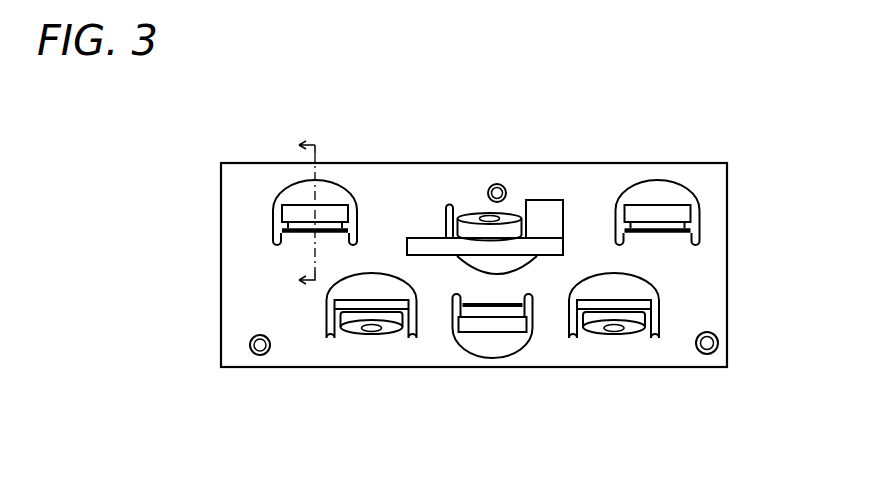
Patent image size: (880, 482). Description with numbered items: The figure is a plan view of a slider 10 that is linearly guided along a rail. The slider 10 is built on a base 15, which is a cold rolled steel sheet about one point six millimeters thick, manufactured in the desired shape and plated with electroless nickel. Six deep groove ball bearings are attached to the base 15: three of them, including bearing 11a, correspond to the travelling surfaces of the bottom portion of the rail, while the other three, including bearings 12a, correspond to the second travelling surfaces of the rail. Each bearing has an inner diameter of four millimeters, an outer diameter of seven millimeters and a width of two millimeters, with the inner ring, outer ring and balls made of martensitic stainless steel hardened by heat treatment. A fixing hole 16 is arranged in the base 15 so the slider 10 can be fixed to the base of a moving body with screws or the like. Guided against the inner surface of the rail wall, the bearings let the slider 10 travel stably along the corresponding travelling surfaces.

The slider 10 is at (175, 254).
The bearing 11a is at (492, 333).
The bearing 12a is at (637, 323).
The base 15 is at (248, 315).
The fixing hole 16 is at (707, 354).